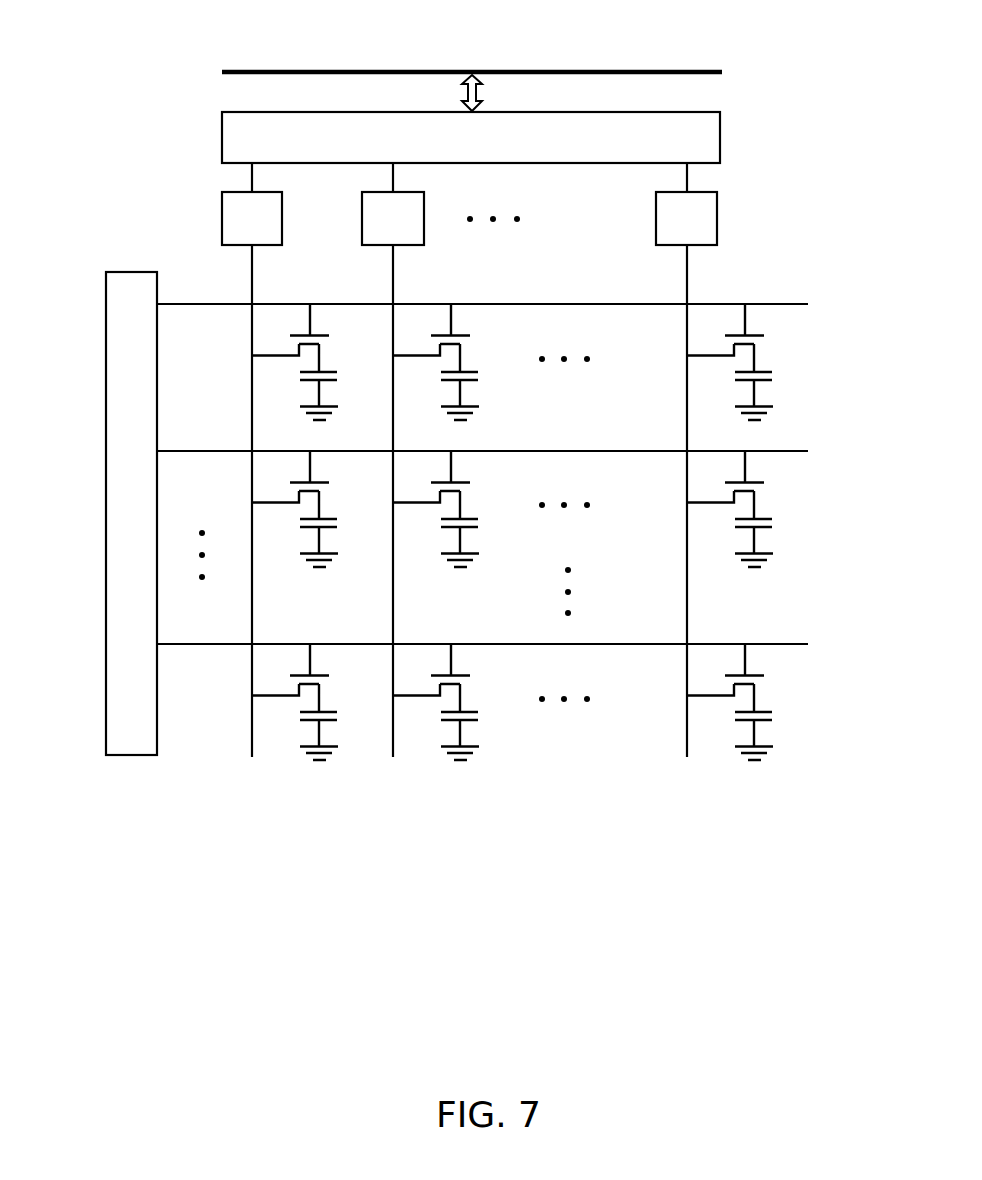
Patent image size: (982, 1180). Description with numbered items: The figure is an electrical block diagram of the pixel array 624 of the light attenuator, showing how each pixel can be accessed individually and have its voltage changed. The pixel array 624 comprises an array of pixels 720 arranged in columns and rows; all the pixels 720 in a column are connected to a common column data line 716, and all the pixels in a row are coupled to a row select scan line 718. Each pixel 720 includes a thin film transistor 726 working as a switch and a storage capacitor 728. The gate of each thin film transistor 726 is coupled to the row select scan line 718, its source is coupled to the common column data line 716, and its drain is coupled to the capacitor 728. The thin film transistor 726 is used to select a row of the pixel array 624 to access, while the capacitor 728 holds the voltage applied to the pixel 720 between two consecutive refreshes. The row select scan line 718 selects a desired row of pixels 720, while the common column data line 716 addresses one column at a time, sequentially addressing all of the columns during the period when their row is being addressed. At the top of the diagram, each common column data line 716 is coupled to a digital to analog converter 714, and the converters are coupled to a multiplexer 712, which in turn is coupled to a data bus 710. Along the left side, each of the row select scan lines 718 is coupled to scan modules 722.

The data bus 710 is at (609, 68).
The multiplexer 712 is at (722, 134).
The digital to analog converter 714 is at (718, 216).
The pixel array 624 is at (525, 485).
The common column data line 716 is at (688, 602).
The row select scan line 718 is at (632, 646).
The pixel 720 is at (772, 372).
The scan modules 722 is at (104, 342).
The thin film transistor 726 is at (471, 336).
The storage capacitor 728 is at (478, 382).